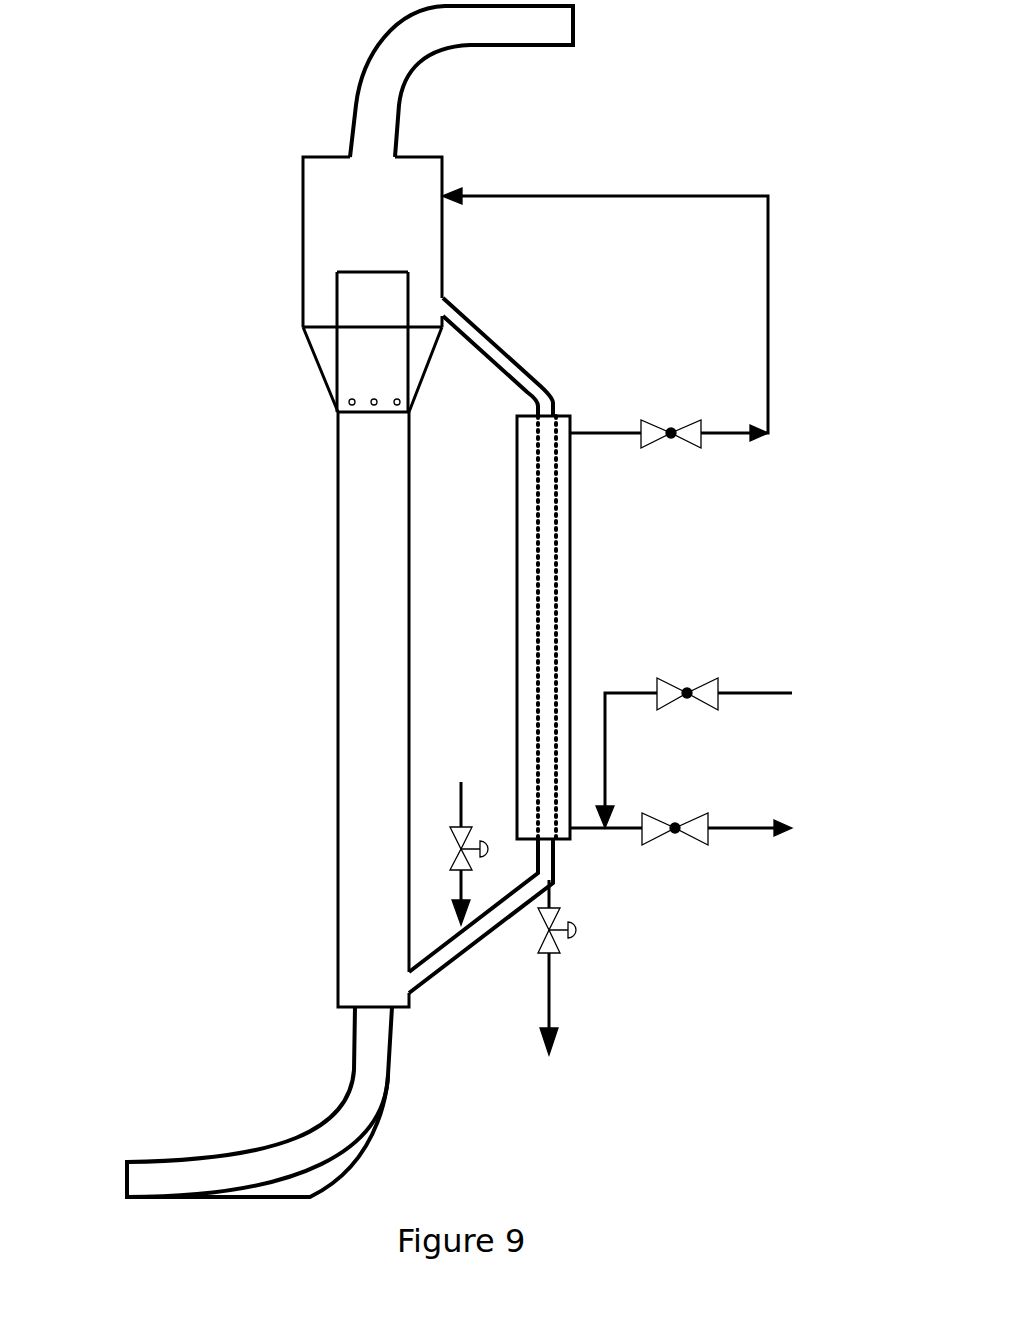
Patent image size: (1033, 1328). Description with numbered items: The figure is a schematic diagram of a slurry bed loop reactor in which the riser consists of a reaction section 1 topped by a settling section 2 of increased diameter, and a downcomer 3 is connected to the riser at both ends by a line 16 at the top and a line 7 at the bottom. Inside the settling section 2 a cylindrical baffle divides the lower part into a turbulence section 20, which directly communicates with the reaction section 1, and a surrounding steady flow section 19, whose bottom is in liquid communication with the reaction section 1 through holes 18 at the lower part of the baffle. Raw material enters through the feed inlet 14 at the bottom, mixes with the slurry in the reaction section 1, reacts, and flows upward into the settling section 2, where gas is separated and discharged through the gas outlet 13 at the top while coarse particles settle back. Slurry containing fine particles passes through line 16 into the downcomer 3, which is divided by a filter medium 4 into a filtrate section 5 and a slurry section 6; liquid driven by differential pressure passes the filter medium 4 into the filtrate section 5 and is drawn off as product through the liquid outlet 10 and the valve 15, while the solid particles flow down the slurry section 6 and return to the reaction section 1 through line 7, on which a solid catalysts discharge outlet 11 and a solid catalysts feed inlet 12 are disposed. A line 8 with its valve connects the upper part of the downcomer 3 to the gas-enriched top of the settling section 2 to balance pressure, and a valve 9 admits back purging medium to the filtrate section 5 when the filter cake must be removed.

The reaction section 1 is at (338, 640).
The settling section 2 is at (302, 193).
The downcomer 3 is at (517, 513).
The filter medium 4 is at (538, 595).
The filtrate section 5 is at (544, 627).
The slurry section 6 is at (557, 633).
The line 7 is at (432, 975).
The line (communicating tube with valve) 8 is at (673, 431).
The valve 9 is at (688, 691).
The liquid outlet 10 is at (592, 832).
The solid catalysts discharge outlet 11 is at (552, 977).
The solid catalysts feed inlet 12 is at (455, 885).
The gas outlet 13 is at (483, 50).
The feed inlet 14 is at (325, 1117).
The valve 15 is at (677, 823).
The line 16 is at (515, 353).
The hole 18 is at (340, 402).
The steady flow section 19 is at (325, 340).
The turbulence section 20 is at (377, 285).